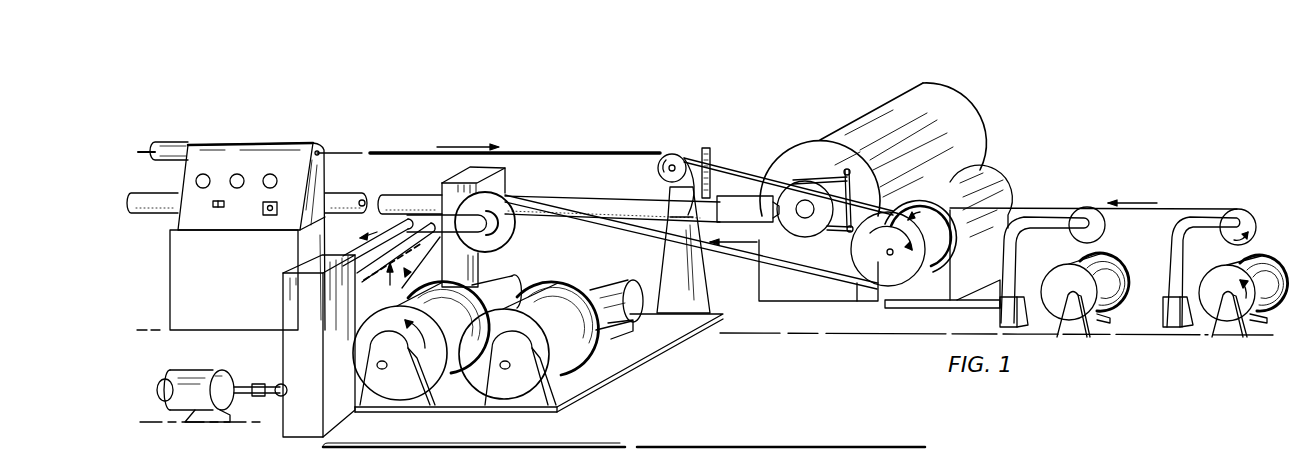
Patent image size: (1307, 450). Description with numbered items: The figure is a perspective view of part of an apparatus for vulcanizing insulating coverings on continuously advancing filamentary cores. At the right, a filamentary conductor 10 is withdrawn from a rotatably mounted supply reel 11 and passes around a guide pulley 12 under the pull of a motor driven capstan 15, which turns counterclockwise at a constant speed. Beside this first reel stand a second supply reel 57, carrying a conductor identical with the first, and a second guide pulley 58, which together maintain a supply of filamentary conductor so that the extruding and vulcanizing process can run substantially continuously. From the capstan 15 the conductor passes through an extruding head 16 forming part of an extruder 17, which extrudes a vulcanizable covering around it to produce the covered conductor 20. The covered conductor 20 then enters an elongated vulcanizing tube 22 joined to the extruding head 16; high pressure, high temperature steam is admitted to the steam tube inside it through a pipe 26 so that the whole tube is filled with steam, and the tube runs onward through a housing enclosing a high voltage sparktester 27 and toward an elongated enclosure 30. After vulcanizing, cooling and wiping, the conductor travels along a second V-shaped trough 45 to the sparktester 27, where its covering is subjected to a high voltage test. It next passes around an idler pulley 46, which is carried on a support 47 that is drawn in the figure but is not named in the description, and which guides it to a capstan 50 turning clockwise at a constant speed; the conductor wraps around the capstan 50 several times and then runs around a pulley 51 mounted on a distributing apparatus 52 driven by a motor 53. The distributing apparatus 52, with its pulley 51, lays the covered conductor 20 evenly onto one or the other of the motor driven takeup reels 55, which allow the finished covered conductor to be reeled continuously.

The filamentary conductor 10 is at (1170, 208).
The supply reel 11 is at (1243, 320).
The guide pulley 12 is at (1248, 215).
The motor driven capstan 15 is at (950, 238).
The extruding head 16 is at (812, 233).
The extruder 17 is at (975, 124).
The covered conductor 20 is at (145, 150).
The vulcanizing tube 22 is at (540, 221).
The pipe 26 is at (712, 150).
The high voltage sparktester 27 is at (293, 141).
The elongated enclosure 30 is at (800, 447).
The second V-shaped trough 45 is at (182, 140).
The idler pulley 46 is at (677, 154).
The support post 47 is at (663, 267).
The capstan 50 is at (907, 278).
The pulley 51 is at (510, 240).
The distributing apparatus 52 is at (391, 263).
The motor 53 is at (208, 373).
The takeup reels 55 is at (470, 385).
The second supply reel 57 is at (1113, 263).
The second guide pulley 58 is at (1090, 210).